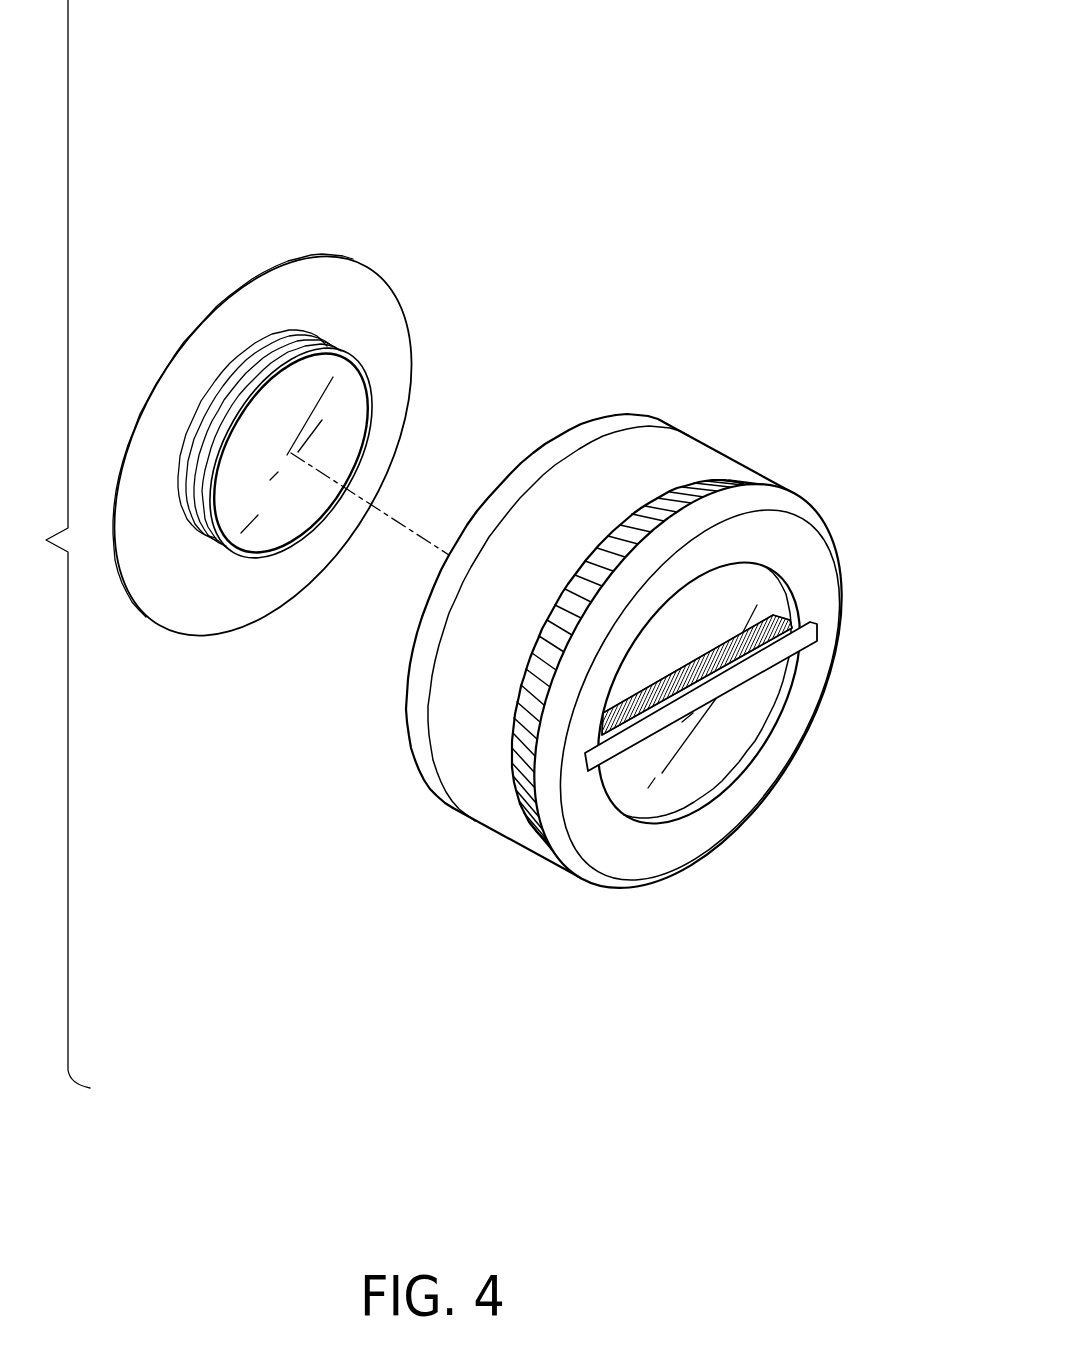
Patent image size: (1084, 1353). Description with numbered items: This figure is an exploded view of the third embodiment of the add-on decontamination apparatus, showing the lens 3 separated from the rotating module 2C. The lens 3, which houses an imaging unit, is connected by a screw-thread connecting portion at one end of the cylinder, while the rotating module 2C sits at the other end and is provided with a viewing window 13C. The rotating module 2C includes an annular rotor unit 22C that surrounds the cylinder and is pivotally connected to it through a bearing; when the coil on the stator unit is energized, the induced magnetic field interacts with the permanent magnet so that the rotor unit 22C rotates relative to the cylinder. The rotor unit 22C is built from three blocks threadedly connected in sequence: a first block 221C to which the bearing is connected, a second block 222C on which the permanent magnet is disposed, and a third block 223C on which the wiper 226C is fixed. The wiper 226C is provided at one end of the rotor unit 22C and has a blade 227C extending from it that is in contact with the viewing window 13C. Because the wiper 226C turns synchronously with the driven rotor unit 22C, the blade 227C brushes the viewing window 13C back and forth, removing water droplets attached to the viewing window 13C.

The lens 3 is at (403, 211).
The rotating module 2C is at (599, 669).
The rotor unit 22C is at (575, 718).
The first block 221C is at (422, 742).
The second block 222C is at (493, 812).
The third block 223C is at (671, 712).
The viewing window 13C is at (727, 724).
The wiper 226C is at (761, 662).
The blade 227C is at (798, 602).